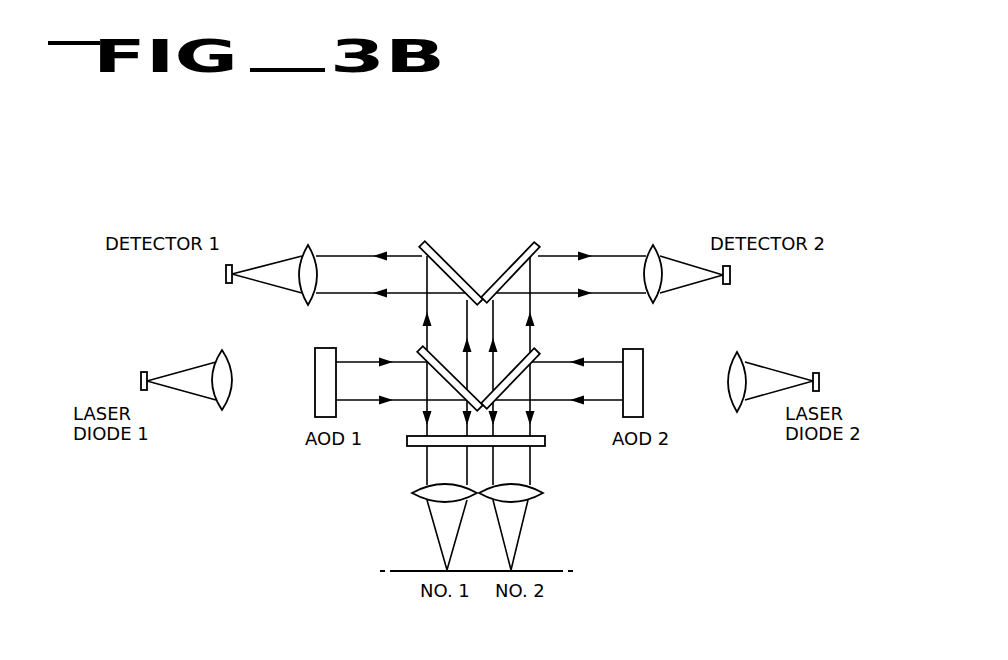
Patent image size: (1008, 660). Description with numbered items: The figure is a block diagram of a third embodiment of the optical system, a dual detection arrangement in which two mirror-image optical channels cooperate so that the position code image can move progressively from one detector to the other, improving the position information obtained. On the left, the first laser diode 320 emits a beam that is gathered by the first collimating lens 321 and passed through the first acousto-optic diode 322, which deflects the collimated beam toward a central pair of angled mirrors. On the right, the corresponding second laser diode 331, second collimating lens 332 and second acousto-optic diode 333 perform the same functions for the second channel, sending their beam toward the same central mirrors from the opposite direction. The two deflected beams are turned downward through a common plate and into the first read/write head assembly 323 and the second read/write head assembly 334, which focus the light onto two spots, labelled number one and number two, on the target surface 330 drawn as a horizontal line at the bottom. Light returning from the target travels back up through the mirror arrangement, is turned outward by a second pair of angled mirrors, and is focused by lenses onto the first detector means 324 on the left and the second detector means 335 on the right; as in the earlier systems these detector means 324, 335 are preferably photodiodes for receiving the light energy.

The first laser diode 320 is at (144, 372).
The first collimating lens 321 is at (224, 412).
The first acousto-optic diode 322 is at (323, 348).
The first read/write head assembly 323 is at (412, 492).
The first detector means 324 is at (302, 250).
The target surface 330 is at (555, 571).
The second laser diode 331 is at (817, 372).
The second collimating lens 332 is at (740, 412).
The second acousto-optic diode 333 is at (643, 350).
The second read/write head assembly 334 is at (543, 490).
The second detector means 335 is at (658, 250).